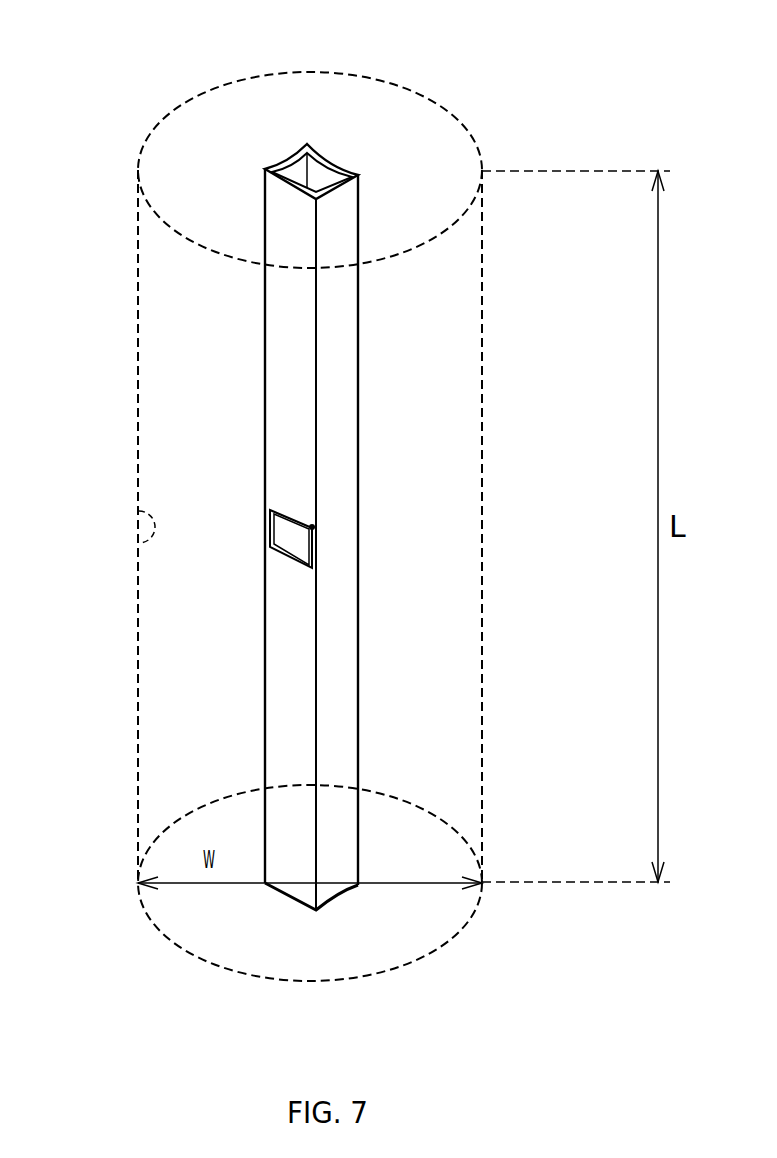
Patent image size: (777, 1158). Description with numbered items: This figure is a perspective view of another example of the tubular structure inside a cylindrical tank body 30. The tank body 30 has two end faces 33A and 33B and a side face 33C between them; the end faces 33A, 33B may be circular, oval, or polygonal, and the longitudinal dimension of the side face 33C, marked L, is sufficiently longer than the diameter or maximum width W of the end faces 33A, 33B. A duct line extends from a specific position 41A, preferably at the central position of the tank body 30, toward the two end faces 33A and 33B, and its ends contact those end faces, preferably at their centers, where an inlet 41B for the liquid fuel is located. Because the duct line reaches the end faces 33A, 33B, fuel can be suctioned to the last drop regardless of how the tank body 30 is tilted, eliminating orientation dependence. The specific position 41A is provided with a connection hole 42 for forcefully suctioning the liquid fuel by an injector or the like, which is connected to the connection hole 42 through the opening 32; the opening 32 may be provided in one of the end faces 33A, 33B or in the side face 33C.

The tank body 30 is at (353, 533).
The opening 32 is at (137, 526).
The end face 33A is at (312, 90).
The end face 33B is at (317, 975).
The side face 33C is at (463, 585).
The specific position 41A is at (312, 527).
The inlet 41B is at (330, 158).
The connection hole 42 is at (283, 527).